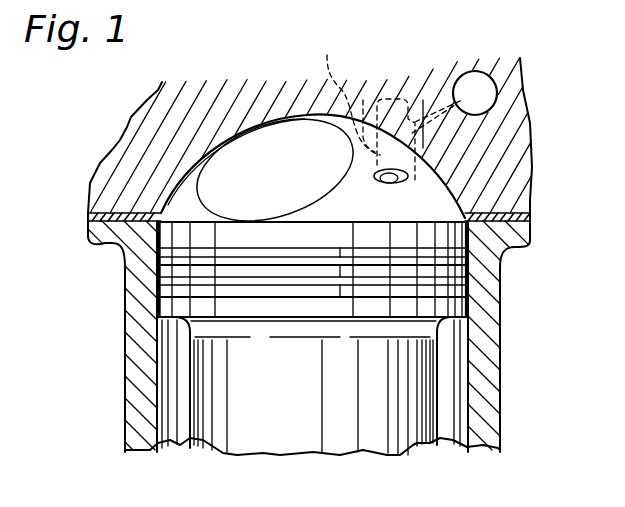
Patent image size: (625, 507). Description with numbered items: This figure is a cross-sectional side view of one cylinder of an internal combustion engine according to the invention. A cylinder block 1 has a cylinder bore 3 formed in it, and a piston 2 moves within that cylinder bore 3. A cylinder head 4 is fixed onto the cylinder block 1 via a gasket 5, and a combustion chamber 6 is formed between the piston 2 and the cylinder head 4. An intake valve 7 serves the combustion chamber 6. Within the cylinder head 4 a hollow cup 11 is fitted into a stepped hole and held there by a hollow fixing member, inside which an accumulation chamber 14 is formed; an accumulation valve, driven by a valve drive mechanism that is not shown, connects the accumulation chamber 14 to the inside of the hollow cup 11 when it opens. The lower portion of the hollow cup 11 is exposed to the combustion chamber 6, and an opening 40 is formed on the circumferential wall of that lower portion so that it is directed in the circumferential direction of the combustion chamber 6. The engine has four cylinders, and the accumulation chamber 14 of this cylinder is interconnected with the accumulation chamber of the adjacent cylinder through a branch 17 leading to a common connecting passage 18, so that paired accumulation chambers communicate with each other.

The cylinder block 1 is at (488, 392).
The piston 2 is at (395, 438).
The cylinder bore 3 is at (467, 436).
The cylinder head 4 is at (228, 110).
The head gasket 5 is at (532, 218).
The combustion chamber 6 is at (341, 209).
The intake valve 7 is at (217, 185).
The hollow cup 11 is at (392, 154).
The accumulation chamber 14 is at (346, 93).
The branch 17 is at (441, 108).
The common connecting passage 18 is at (480, 92).
The opening 40 is at (398, 186).